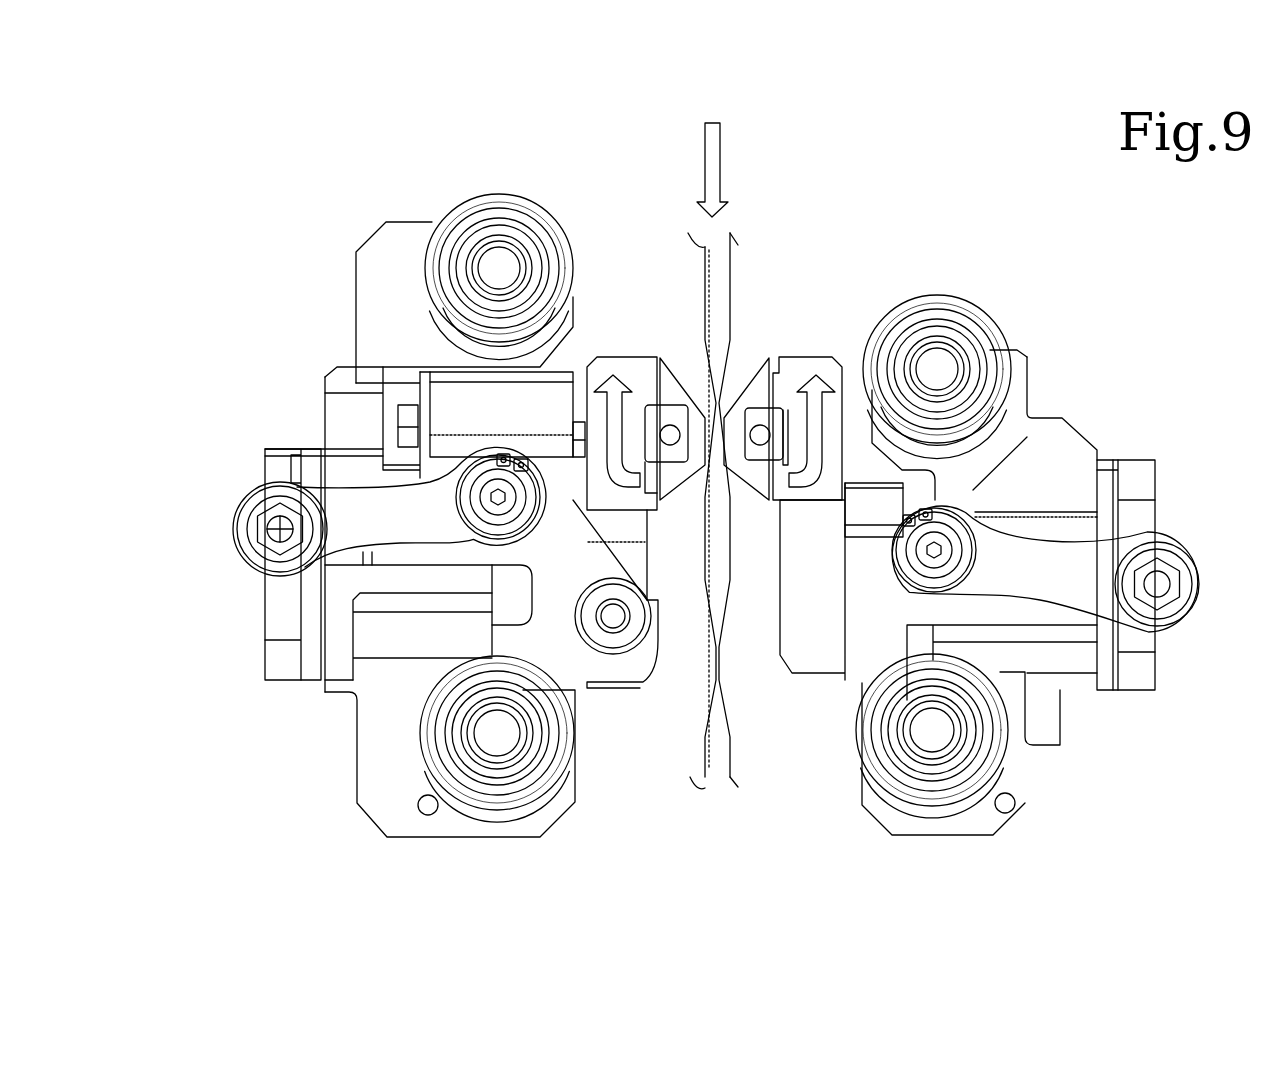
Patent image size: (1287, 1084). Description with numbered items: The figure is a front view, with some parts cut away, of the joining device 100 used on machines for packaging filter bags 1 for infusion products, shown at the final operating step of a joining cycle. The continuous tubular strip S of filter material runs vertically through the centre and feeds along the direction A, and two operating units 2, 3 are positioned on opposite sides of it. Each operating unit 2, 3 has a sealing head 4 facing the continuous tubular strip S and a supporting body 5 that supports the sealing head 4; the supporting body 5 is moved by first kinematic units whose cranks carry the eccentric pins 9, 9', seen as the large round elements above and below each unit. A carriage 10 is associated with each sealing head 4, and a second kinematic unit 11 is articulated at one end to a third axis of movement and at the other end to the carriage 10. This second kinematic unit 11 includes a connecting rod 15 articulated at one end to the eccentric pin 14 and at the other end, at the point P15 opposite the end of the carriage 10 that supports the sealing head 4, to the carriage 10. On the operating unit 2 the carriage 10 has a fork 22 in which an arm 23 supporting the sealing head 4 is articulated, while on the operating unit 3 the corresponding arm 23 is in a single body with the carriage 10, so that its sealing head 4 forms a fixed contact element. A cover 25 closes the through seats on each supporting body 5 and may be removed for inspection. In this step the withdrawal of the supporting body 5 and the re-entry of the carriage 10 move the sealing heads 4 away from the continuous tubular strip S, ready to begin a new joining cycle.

The filter bag 1 is at (738, 633).
The operating unit 2 is at (345, 305).
The operating unit 3 is at (1052, 405).
The sealing head 4 is at (675, 385).
The supporting body 5 is at (343, 763).
The pin 9 is at (721, 309).
The pin 9' is at (714, 752).
The carriage 10 is at (523, 643).
The second kinematic unit 11 is at (418, 553).
The eccentric pin 14 is at (492, 488).
The connecting rod 15 is at (358, 520).
The fork 22 is at (635, 662).
The arm 23 is at (640, 527).
The cover 25 is at (288, 595).
The joining device 100 is at (830, 187).
The feed direction A is at (705, 150).
The continuous tubular strip S is at (740, 290).
The articulation point P15 is at (280, 529).